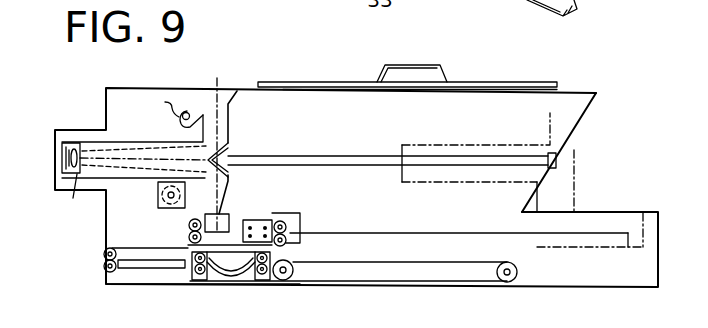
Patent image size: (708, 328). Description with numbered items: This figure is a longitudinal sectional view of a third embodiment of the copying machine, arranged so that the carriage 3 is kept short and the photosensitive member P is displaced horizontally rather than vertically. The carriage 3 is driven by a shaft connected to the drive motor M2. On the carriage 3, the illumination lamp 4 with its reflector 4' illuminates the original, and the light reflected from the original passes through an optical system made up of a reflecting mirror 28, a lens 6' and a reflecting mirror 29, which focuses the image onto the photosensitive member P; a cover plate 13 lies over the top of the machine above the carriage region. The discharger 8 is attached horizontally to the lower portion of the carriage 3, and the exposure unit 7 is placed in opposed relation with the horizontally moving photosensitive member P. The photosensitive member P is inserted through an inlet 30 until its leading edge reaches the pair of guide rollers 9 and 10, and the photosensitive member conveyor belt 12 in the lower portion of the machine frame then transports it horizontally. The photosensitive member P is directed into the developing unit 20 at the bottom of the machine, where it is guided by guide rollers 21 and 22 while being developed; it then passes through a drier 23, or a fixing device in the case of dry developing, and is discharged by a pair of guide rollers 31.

The carriage 3 is at (198, 206).
The illumination lamp 4 is at (191, 91).
The reflector 4' is at (162, 105).
The lens 6' is at (73, 198).
The exposure unit 7 is at (223, 214).
The discharger 8 is at (258, 220).
The guide roller 9 is at (284, 221).
The guide roller 10 is at (288, 241).
The photosensitive member conveyor belt 12 is at (629, 234).
The cover plate 13 is at (331, 87).
The developing unit 20 is at (214, 283).
The guide roller 21 is at (264, 281).
The guide roller 22 is at (349, 156).
The drier 23 is at (151, 285).
The reflecting mirror 28 is at (229, 147).
The reflecting mirror 29 is at (62, 161).
The inlet 30 is at (607, 212).
The guide rollers 31 is at (104, 256).
The drive motor M2 is at (158, 196).
The photosensitive member P is at (433, 232).